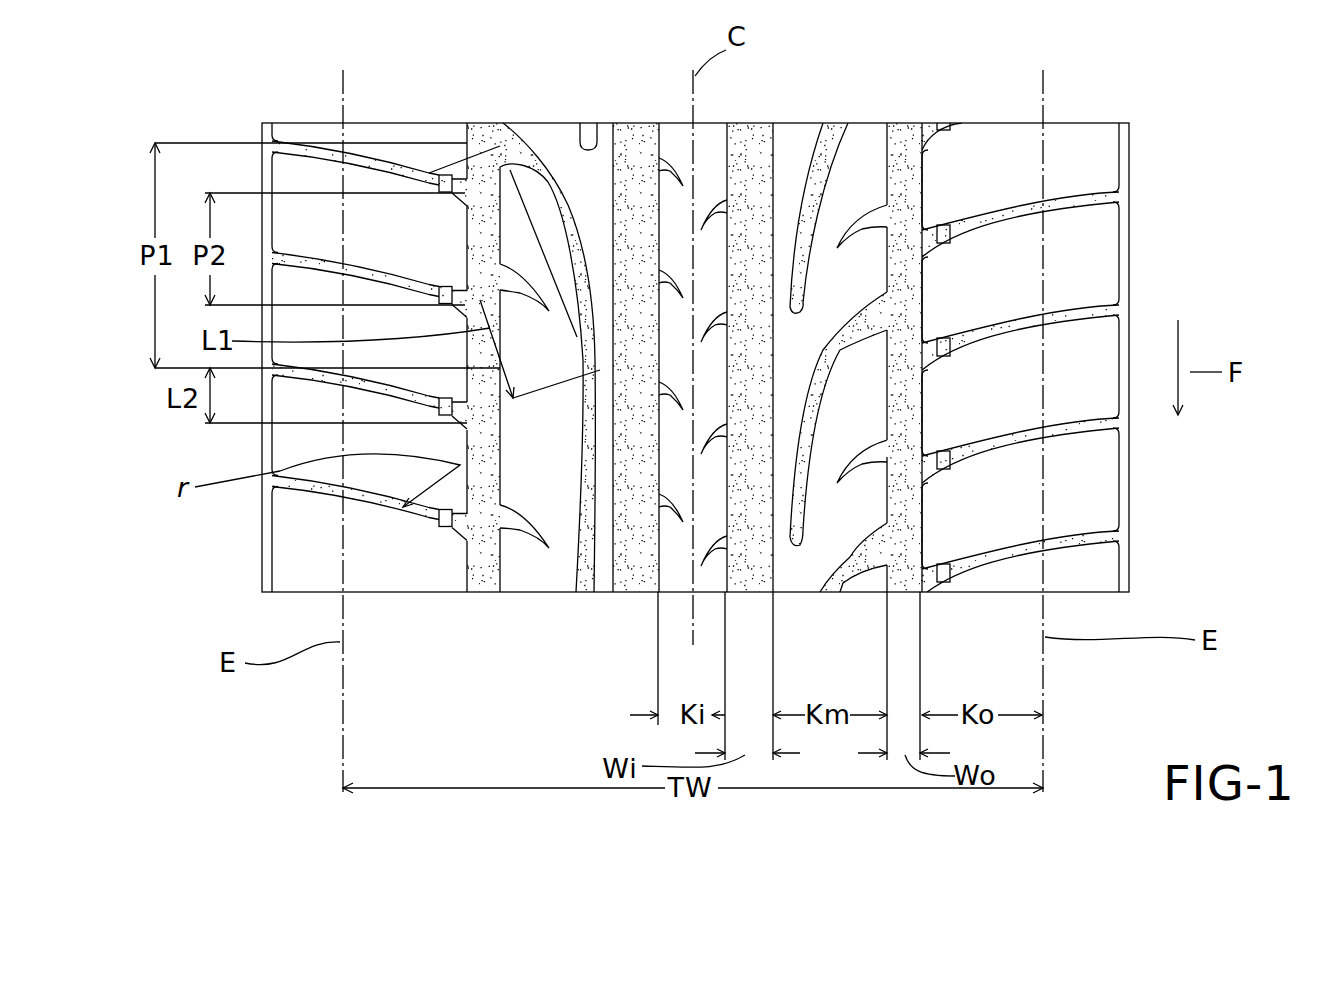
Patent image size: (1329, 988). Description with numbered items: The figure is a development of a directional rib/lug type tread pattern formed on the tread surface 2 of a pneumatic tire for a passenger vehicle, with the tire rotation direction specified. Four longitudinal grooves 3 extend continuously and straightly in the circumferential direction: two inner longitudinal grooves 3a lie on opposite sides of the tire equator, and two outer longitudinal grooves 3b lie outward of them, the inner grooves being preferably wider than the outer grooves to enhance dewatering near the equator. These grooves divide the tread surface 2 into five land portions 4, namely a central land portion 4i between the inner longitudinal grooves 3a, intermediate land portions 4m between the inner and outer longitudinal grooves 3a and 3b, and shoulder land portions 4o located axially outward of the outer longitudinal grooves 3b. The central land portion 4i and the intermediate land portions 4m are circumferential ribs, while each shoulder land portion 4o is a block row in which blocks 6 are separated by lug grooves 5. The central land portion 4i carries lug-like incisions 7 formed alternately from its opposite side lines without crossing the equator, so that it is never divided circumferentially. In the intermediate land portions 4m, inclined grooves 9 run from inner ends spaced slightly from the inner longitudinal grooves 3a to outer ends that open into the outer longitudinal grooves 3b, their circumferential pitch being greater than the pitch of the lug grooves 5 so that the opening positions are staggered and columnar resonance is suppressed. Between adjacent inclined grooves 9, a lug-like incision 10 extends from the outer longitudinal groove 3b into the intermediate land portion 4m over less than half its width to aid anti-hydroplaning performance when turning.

The tread surface 2 is at (1150, 110).
The longitudinal grooves 3 is at (758, 142).
The inner longitudinal grooves 3a is at (637, 142).
The outer longitudinal grooves 3b is at (486, 146).
The land portions 4 is at (832, 388).
The central land portion 4i is at (636, 423).
The intermediate land portions 4m is at (795, 580).
The shoulder land portions 4o is at (1020, 383).
The lug grooves 5 is at (373, 493).
The blocks 6 is at (977, 293).
The lug-like incisions 7 is at (668, 518).
The inclined grooves 9 is at (564, 186).
The lug-like incision 10 is at (516, 580).